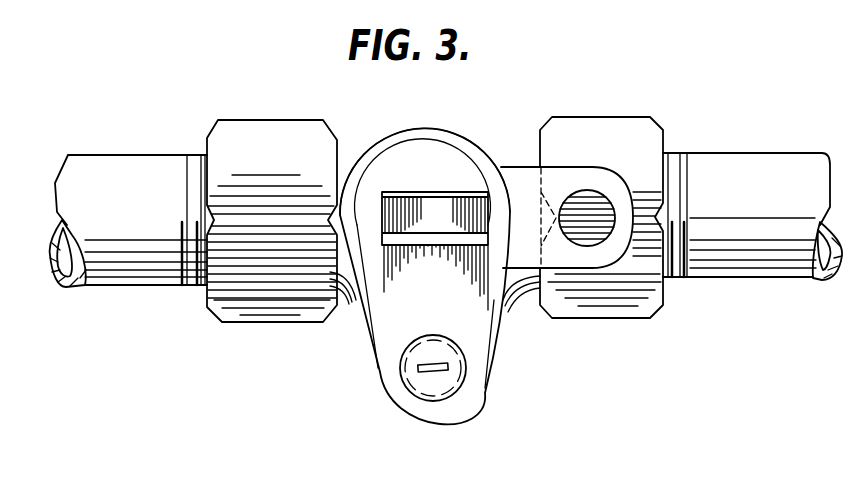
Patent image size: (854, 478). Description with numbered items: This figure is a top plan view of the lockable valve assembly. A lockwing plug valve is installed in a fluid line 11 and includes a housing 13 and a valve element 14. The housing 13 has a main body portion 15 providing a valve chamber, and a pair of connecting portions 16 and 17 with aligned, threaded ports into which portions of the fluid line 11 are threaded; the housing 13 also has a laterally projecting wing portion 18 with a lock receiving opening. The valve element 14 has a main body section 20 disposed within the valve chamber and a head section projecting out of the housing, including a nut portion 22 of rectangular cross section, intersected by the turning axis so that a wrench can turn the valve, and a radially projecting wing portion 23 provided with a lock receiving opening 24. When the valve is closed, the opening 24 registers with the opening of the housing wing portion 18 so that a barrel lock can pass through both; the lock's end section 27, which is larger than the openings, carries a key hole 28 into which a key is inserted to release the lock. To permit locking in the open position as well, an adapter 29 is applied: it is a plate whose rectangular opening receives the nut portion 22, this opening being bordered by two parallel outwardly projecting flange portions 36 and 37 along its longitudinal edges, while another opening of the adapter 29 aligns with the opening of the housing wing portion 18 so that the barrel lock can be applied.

The fluid line 11 is at (727, 153).
The housing 13 is at (445, 121).
The valve element 14 is at (400, 168).
The main body portion 15 is at (372, 140).
The connecting portion 16 is at (247, 120).
The connecting portion 17 is at (608, 117).
The wing portion 18 is at (365, 338).
The main body section 20 is at (462, 154).
The nut portion 22 is at (467, 205).
The wing portion 23 is at (575, 167).
The lock receiving opening 24 is at (598, 189).
The end section 27 is at (408, 393).
The key hole 28 is at (450, 370).
The adapter 29 is at (500, 327).
The flange portion 36 is at (415, 192).
The flange portion 37 is at (435, 285).